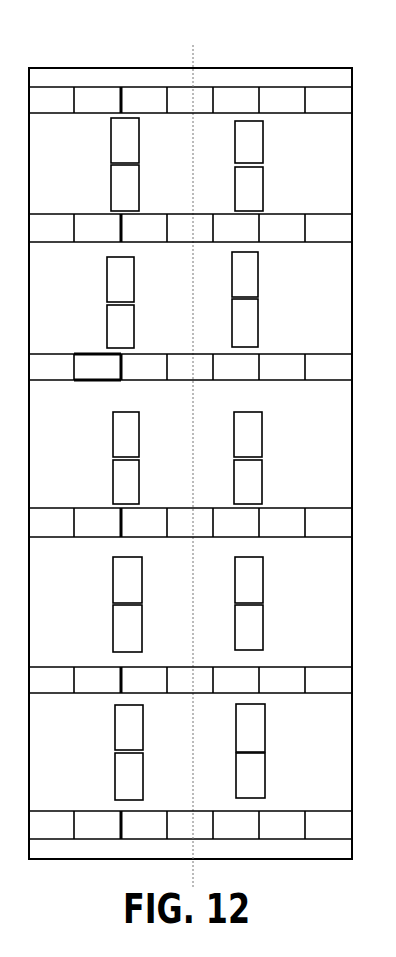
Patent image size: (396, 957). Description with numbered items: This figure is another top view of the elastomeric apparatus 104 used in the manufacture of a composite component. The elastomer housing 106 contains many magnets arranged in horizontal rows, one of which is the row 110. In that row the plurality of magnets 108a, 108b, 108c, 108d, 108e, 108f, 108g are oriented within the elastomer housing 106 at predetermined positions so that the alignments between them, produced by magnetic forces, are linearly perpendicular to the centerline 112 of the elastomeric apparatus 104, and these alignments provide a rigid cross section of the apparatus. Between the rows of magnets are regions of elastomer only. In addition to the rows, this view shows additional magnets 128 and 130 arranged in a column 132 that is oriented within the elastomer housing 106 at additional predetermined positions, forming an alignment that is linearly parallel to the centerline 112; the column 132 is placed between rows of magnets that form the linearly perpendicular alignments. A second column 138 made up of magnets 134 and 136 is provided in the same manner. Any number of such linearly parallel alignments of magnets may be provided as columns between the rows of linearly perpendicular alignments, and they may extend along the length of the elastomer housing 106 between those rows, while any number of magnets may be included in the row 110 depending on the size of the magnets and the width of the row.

The elastomeric apparatus 104 is at (163, 38).
The elastomer housing 106 is at (140, 63).
The magnet 108a is at (50, 373).
The magnet 108b is at (99, 373).
The magnet 108c is at (143, 373).
The magnet 108d is at (189, 373).
The magnet 108e is at (233, 373).
The magnet 108f is at (281, 373).
The magnet 108g is at (319, 373).
The row 110 is at (350, 370).
The centerline 112 is at (194, 153).
The magnet 128 is at (256, 435).
The magnet 130 is at (256, 477).
The column 132 is at (247, 504).
The magnet 134 is at (137, 435).
The magnet 136 is at (137, 477).
The second column 138 is at (128, 504).